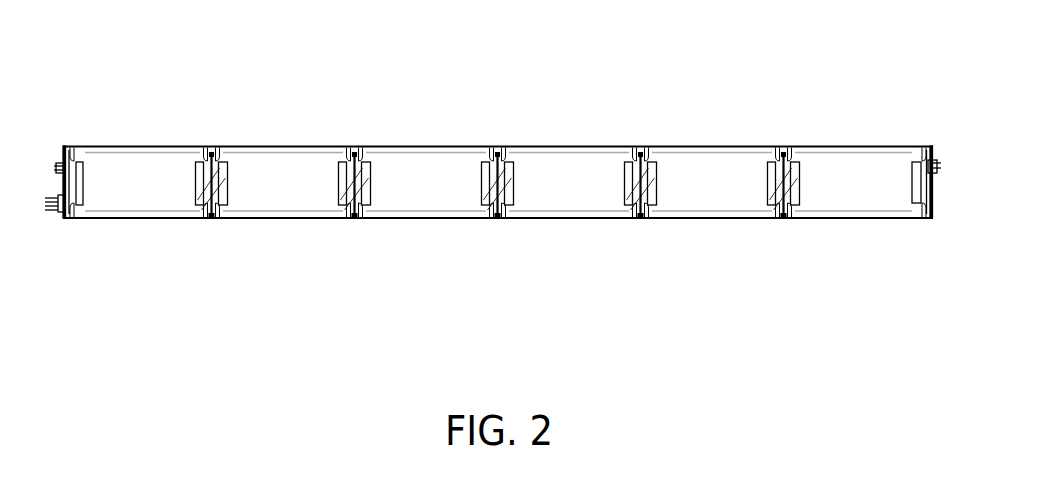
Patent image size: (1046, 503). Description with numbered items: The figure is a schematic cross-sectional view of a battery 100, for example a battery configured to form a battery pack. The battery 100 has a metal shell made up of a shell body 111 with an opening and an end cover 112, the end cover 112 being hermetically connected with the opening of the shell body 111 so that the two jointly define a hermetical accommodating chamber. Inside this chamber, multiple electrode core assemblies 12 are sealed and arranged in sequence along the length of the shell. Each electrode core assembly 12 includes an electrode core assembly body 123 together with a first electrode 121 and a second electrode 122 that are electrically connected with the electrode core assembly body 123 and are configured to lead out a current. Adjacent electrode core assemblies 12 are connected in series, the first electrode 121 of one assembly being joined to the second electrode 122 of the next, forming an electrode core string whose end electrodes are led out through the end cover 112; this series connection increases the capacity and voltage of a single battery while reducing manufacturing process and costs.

The battery 100 is at (450, 25).
The shell body 111 is at (683, 218).
The end cover 112 is at (62, 180).
The electrode core assembly 12 is at (242, 173).
The first electrode 121 is at (226, 185).
The second electrode 122 is at (197, 185).
The electrode core assembly body 123 is at (297, 167).